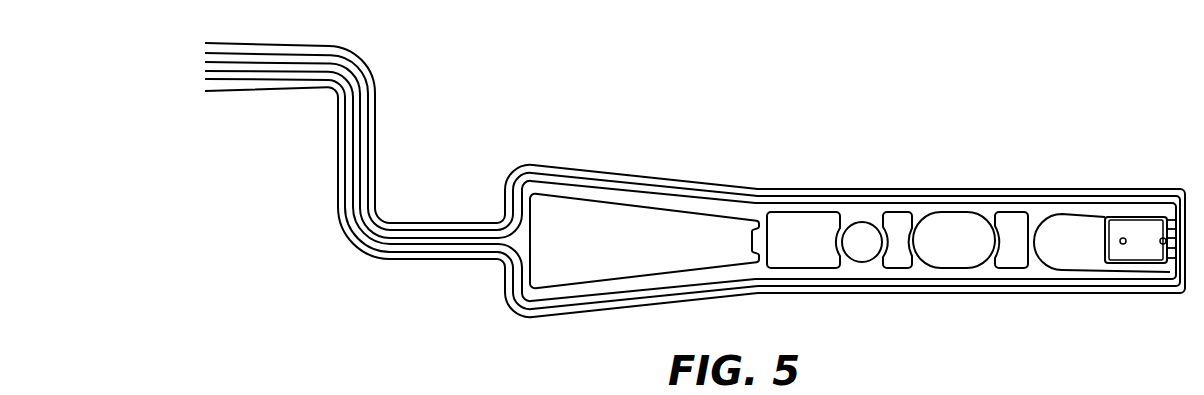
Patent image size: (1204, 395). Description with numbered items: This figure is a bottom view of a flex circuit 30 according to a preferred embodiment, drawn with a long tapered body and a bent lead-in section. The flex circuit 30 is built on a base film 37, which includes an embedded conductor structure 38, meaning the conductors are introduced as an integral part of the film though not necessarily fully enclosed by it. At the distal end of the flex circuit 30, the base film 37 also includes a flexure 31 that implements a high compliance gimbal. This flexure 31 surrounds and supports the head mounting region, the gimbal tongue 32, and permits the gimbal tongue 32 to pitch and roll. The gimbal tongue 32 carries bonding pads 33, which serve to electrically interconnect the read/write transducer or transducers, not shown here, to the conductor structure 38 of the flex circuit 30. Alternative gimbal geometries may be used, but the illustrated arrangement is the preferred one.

The flex circuit 30 is at (798, 153).
The flexure 31 is at (1045, 189).
The gimbal tongue 32 is at (1125, 215).
The bonding pads 33 is at (1166, 250).
The base film 37 is at (762, 266).
The conductor structure 38 is at (878, 287).